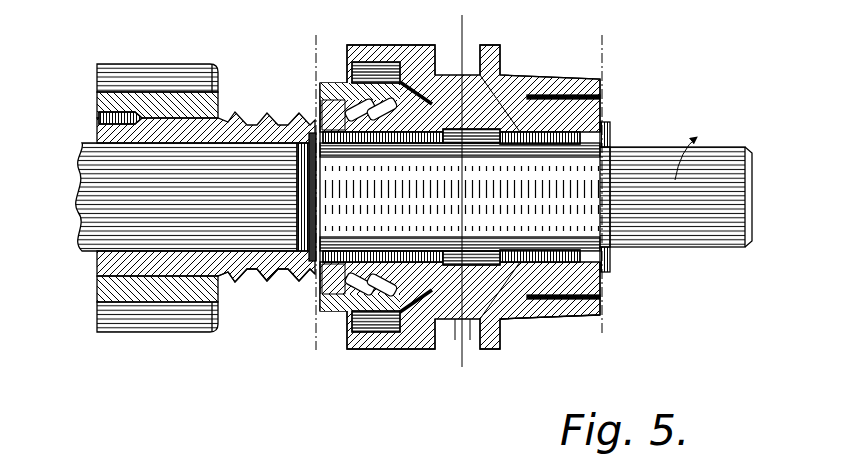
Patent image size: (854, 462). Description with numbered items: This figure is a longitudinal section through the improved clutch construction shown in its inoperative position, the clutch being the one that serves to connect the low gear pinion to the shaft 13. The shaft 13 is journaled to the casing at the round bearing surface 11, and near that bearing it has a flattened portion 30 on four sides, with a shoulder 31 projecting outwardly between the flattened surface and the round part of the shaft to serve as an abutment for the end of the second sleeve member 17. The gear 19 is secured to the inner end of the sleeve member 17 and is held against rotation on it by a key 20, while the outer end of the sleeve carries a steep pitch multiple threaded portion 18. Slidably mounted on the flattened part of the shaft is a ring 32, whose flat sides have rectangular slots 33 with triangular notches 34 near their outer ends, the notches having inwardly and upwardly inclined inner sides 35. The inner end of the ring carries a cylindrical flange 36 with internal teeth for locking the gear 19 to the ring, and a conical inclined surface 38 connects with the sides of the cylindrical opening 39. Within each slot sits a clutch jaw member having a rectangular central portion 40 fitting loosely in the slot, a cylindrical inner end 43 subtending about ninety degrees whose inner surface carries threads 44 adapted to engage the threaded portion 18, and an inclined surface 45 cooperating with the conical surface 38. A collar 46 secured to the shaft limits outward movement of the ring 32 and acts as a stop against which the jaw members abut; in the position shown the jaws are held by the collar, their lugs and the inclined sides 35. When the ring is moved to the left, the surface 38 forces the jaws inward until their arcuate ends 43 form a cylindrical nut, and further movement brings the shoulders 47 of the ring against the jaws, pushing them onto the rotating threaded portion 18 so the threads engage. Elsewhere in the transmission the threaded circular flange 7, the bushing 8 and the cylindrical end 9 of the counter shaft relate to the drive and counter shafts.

The threaded circular flange 7 is at (313, 60).
The bushing 8 is at (604, 58).
The cylindrical end 9 is at (460, 23).
The round bearing surface 11 is at (705, 163).
The shaft 13 is at (88, 233).
The second sleeve member 17 is at (110, 263).
The threaded portion 18 is at (253, 278).
The gear 19 is at (118, 283).
The key 20 is at (97, 118).
The flattened portion 30 is at (460, 197).
The shoulder 31 is at (300, 265).
The ring 32 is at (527, 317).
The rectangular slots 33 is at (523, 133).
The triangular notches 34 is at (602, 98).
The inner sides 35 is at (610, 260).
The cylindrical flange 36 is at (362, 58).
The conical inclined surface 38 is at (425, 80).
The cylindrical opening 39 is at (462, 322).
The rectangular central portion 40 is at (480, 100).
The inner end 43 is at (320, 86).
The threads 44 is at (325, 103).
The inclined surface 45 is at (412, 68).
The collar 46 is at (610, 137).
The shoulders 47 is at (477, 262).